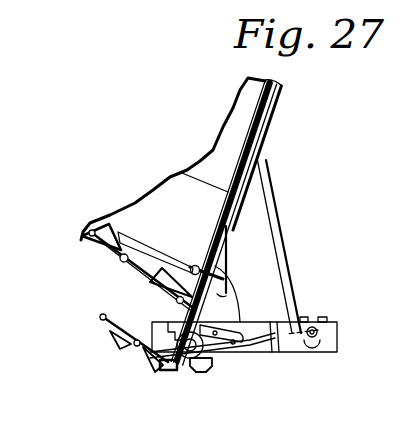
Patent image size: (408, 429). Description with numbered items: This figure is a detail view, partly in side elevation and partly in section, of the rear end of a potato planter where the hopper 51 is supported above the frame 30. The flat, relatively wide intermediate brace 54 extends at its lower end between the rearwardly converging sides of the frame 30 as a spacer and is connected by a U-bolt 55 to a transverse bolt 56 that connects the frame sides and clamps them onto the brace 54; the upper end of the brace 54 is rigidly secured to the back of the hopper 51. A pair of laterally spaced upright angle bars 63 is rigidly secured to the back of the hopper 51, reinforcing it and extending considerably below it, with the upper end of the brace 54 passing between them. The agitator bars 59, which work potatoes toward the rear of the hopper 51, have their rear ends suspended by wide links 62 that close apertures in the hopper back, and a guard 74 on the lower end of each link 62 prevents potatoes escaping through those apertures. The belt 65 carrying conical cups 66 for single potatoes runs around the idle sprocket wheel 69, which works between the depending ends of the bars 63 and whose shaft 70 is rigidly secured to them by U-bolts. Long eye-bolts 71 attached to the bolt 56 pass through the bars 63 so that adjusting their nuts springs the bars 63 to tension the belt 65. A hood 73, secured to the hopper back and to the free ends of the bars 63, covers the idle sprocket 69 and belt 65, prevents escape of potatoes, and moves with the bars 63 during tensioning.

The hopper 51 is at (267, 80).
The upright angle bars 63 is at (280, 124).
The intermediate brace 54 is at (274, 198).
The wide links 62 is at (228, 250).
The guard 74 is at (228, 268).
The hood 73 is at (228, 290).
The agitator bars 59 is at (138, 250).
The belt 65 is at (110, 252).
The conical cup 66 is at (92, 243).
The frame 30 is at (327, 349).
The transverse bolt 56 is at (335, 323).
The U-bolt 55 is at (320, 330).
The eye-bolts 71 is at (250, 350).
The idle sprocket wheel 69 is at (200, 372).
The shaft 70 is at (190, 367).